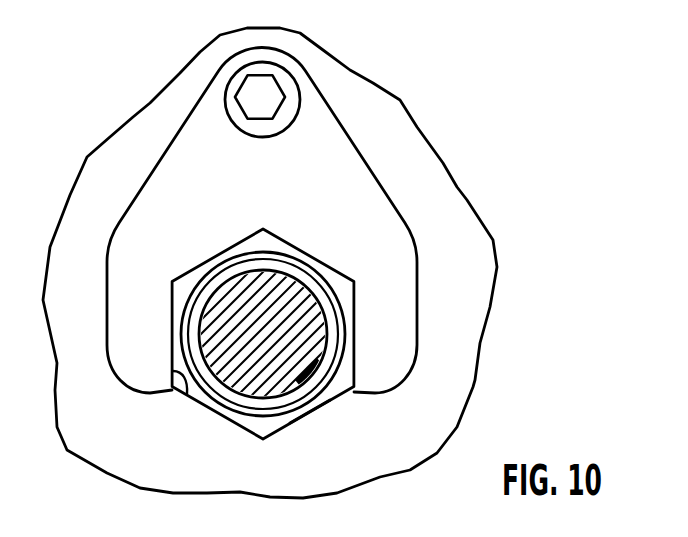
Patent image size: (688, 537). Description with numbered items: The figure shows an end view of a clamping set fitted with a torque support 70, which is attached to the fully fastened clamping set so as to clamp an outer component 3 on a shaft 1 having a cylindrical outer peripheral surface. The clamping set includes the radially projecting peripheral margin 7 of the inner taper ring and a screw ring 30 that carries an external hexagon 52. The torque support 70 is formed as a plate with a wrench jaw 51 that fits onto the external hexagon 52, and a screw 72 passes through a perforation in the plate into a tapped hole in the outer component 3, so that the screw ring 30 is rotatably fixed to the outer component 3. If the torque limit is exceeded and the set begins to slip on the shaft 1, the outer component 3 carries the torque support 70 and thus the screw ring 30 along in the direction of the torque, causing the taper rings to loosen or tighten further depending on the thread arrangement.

The shaft 1 is at (203, 335).
The outer component 3 is at (466, 199).
The peripheral margin 7 is at (327, 303).
The screw ring 30 is at (272, 238).
The wrench jaw 51 is at (187, 395).
The external hexagon 52 is at (310, 416).
The torque support 70 is at (135, 390).
The screw 72 is at (255, 128).